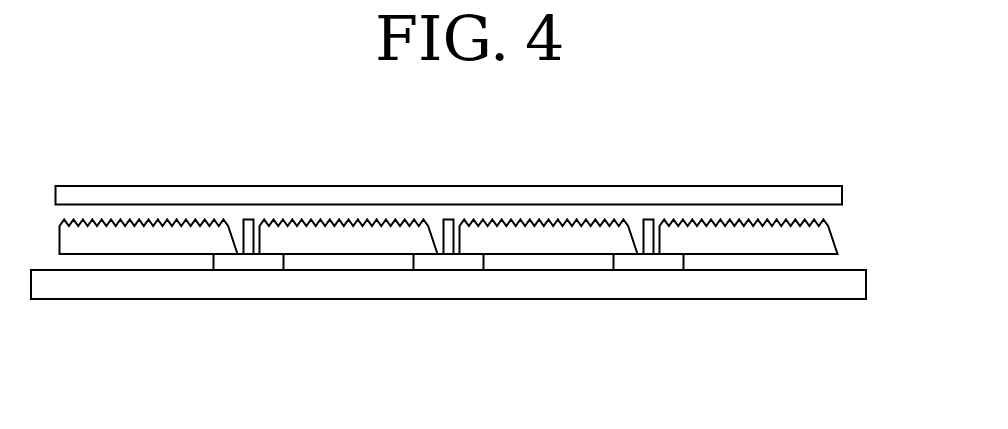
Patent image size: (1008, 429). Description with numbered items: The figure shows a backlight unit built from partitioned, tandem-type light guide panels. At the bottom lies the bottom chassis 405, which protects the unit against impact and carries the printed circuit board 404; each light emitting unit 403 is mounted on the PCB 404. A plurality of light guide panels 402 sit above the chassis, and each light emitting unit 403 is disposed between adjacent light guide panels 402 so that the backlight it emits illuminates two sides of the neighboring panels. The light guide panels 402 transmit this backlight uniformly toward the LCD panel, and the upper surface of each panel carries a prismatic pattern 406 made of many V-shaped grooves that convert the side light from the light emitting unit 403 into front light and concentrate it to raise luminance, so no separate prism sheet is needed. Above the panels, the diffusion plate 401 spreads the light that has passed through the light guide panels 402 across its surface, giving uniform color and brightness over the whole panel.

The diffusion plate 401 is at (720, 193).
The light guide panel 402 is at (790, 245).
The light emitting unit 403 is at (648, 220).
The printed circuit board 404 is at (647, 265).
The bottom chassis 405 is at (720, 292).
The prismatic pattern 406 is at (813, 220).